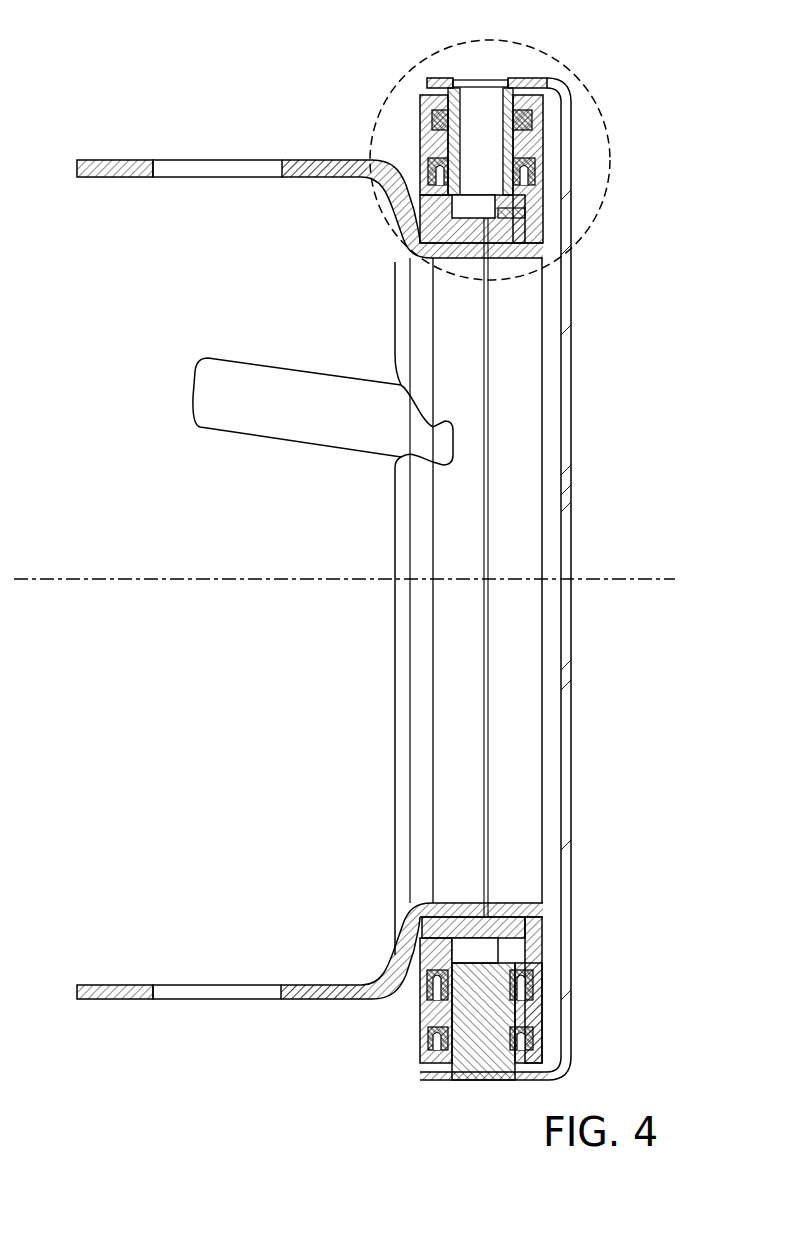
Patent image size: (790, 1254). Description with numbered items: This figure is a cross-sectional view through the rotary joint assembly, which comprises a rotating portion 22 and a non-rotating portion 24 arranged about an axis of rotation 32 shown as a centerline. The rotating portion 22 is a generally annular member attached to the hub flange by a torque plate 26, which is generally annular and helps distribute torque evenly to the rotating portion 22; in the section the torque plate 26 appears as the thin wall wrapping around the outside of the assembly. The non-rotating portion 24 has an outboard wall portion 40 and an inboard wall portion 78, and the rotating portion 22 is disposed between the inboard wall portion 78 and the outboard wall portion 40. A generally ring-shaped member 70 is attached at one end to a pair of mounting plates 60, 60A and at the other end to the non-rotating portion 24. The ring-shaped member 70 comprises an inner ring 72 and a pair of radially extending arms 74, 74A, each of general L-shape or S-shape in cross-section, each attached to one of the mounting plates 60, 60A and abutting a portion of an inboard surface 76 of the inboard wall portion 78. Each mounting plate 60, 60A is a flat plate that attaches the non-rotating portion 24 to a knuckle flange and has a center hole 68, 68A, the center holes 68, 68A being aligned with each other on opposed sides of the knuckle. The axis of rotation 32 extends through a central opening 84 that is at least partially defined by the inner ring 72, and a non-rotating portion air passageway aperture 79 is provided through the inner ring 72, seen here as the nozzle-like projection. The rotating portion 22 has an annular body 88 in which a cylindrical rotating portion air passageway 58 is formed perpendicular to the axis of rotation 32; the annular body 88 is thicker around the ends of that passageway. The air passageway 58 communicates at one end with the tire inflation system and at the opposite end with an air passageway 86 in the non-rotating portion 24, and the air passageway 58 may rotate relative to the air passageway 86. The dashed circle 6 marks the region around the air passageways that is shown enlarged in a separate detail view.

The detail region of FIG. 6 is at (380, 110).
The rotating portion 22 is at (481, 1068).
The non-rotating portion 24 is at (533, 923).
The torque plate 26 is at (565, 683).
The axis of rotation 32 is at (112, 578).
The outboard wall portion 40 is at (535, 953).
The rotating portion air passageway 58 is at (468, 140).
The mounting plate 60 is at (118, 158).
The mounting plate 60A is at (117, 1000).
The center hole 68 is at (218, 160).
The center hole 68A is at (217, 1000).
The generally ring-shaped member 70 is at (433, 675).
The inner ring 72 is at (470, 343).
The radially extending arm 74 is at (393, 208).
The radially extending arm 74A is at (404, 966).
The inboard surface 76 is at (418, 990).
The inboard wall portion 78 is at (420, 1040).
The non-rotating portion air passageway aperture 79 is at (455, 430).
The central opening 84 is at (515, 540).
The non-rotating portion air passageway 86 is at (488, 219).
The annular body 88 is at (480, 1013).